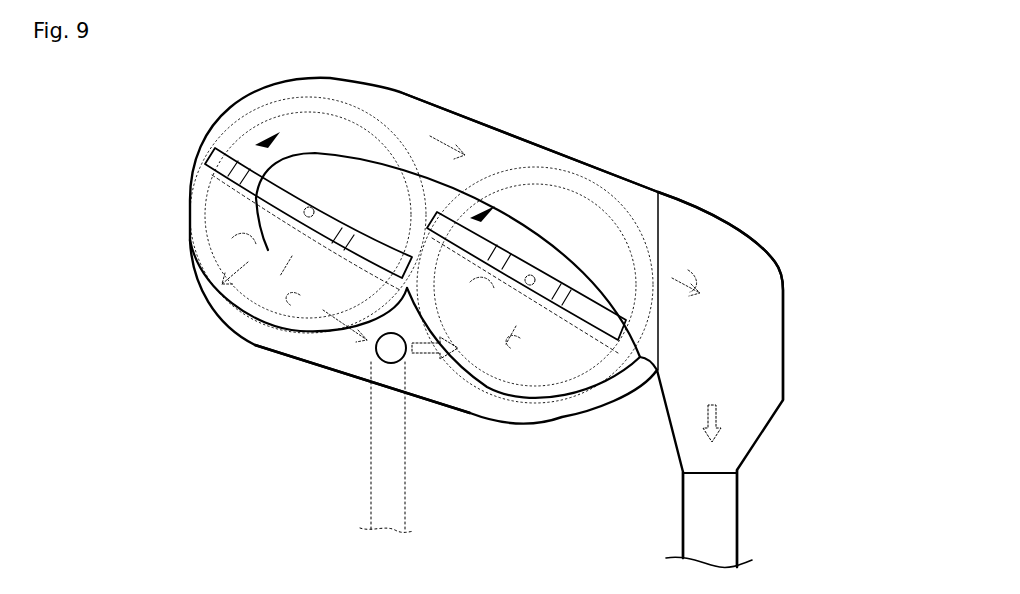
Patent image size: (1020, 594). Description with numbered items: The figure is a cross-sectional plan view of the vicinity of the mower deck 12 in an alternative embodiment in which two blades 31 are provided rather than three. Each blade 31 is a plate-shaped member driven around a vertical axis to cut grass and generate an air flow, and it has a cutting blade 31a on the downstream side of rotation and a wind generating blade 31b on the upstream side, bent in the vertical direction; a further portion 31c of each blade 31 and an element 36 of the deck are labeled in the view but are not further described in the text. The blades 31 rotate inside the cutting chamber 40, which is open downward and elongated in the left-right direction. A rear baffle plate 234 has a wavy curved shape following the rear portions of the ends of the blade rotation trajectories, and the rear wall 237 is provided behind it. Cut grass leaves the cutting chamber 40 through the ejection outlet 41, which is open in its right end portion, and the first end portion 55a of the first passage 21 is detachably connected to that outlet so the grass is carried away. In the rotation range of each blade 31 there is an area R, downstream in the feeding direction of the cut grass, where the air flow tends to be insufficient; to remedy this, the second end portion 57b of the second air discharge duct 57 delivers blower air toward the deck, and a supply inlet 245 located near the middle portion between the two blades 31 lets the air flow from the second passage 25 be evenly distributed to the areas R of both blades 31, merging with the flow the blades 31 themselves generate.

The mower deck 12 is at (550, 155).
The top wall of housing 36 is at (481, 120).
The cutting chamber 40 is at (346, 173).
The ejection outlet 41 is at (665, 260).
The first end portion 55a is at (658, 192).
The first passage 21 is at (675, 524).
The rear baffle plate 234 is at (252, 345).
The rear wall 237 is at (293, 360).
The supply inlet 245 is at (382, 350).
The second passage 25 is at (362, 493).
The second end portion 57b is at (410, 420).
The second air discharge duct 57 is at (440, 447).
The blade 31 is at (268, 160).
The cutting blade 31a is at (266, 124).
The wind generating blade 31b is at (449, 242).
The rotor hub / rotation axis 31c is at (318, 210).
The area R is at (403, 287).